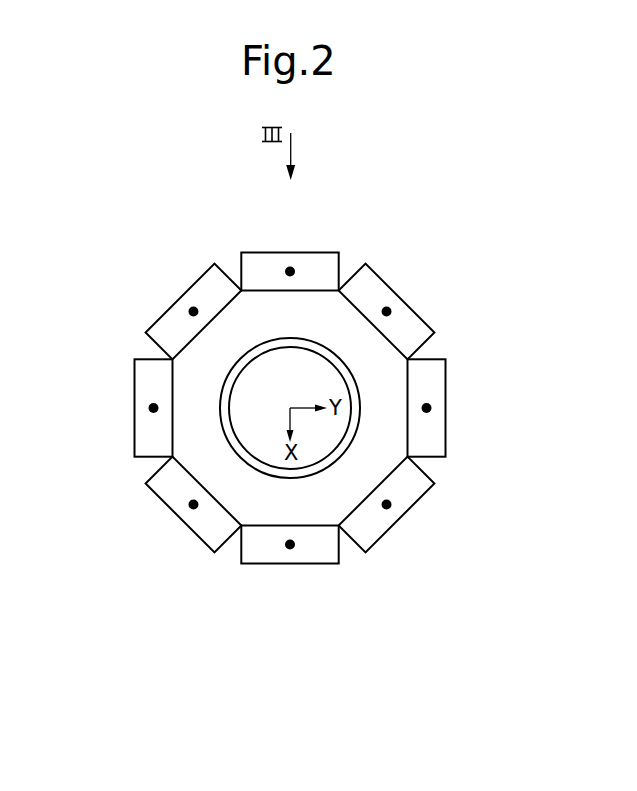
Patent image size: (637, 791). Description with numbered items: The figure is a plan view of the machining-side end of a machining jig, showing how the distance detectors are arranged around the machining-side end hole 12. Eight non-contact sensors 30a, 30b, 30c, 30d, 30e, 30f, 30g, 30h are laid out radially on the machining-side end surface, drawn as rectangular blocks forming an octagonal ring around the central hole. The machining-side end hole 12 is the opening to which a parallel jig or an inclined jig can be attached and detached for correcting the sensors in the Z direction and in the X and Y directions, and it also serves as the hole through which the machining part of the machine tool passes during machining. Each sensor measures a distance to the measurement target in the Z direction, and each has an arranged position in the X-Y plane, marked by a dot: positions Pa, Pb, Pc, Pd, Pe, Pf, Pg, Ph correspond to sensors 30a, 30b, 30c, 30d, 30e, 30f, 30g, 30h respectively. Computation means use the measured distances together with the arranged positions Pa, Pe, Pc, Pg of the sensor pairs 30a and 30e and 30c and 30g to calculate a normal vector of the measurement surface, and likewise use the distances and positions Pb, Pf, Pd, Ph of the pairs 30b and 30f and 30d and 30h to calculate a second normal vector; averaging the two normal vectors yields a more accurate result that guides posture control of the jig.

The machining-side end hole 12 is at (331, 436).
The non-contact sensor 30a is at (133, 428).
The non-contact sensor 30b is at (171, 306).
The non-contact sensor 30c is at (254, 252).
The non-contact sensor 30d is at (387, 273).
The non-contact sensor 30e is at (447, 440).
The non-contact sensor 30f is at (390, 530).
The non-contact sensor 30g is at (310, 563).
The non-contact sensor 30h is at (190, 530).
The arranged position of non-contact sensor Pa is at (153, 407).
The arranged position of non-contact sensor Pb is at (193, 311).
The arranged position of non-contact sensor Pc is at (291, 271).
The arranged position of non-contact sensor Pd is at (387, 311).
The arranged position of non-contact sensor Pe is at (427, 407).
The arranged position of non-contact sensor Pf is at (387, 504).
The arranged position of non-contact sensor Pg is at (290, 543).
The arranged position of non-contact sensor Ph is at (193, 504).